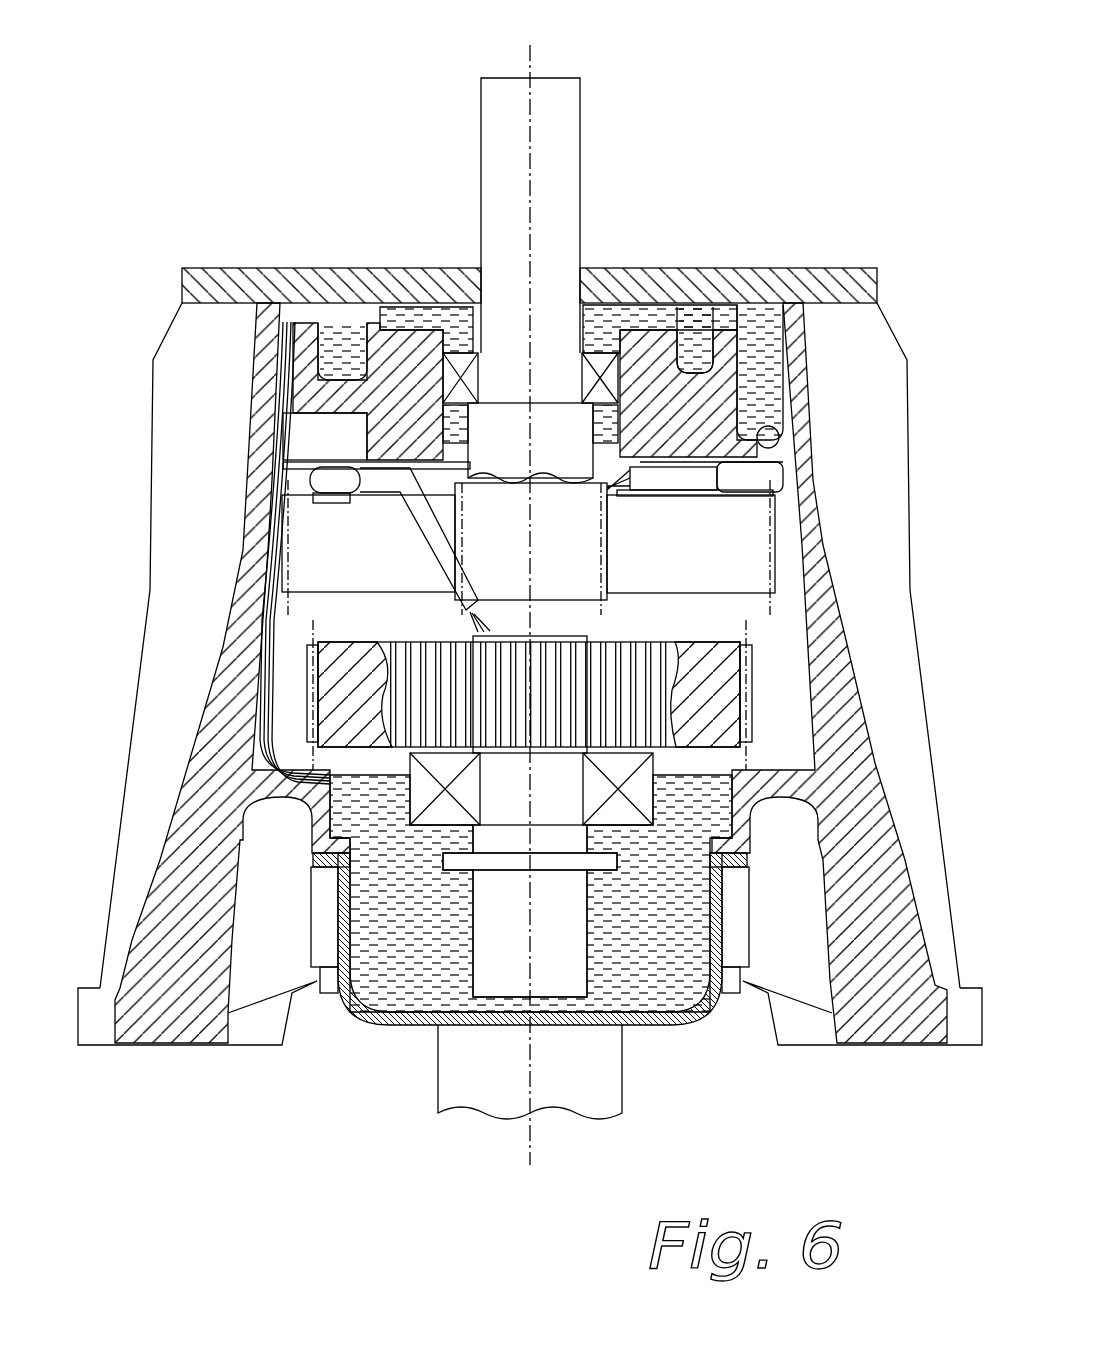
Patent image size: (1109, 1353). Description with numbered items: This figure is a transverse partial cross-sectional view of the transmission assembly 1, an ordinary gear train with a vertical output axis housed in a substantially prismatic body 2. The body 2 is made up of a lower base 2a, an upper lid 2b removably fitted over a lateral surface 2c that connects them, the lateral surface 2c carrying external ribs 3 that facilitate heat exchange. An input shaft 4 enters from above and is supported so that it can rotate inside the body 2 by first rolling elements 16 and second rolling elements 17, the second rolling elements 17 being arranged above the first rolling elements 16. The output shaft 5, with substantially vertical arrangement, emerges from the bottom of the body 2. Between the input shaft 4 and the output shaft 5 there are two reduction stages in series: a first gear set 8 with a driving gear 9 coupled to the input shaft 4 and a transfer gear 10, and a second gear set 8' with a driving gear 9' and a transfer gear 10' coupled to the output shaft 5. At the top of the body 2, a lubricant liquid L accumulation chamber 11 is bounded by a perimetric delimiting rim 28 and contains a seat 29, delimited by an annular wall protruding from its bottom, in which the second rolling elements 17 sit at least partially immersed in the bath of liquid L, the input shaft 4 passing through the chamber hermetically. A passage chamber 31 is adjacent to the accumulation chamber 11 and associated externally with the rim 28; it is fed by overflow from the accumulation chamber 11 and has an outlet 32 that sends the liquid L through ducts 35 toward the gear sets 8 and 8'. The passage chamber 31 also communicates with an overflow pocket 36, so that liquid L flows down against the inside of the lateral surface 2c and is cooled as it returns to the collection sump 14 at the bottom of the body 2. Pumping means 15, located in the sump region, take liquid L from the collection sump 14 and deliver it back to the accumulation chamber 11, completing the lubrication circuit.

The transmission assembly 1 is at (742, 112).
The body 2 is at (112, 866).
The lower base 2a is at (167, 1046).
The upper lid 2b is at (850, 267).
The lateral surface 2c is at (225, 606).
The ribs 3 is at (160, 797).
The input shaft 4 is at (598, 170).
The output shaft 5 is at (412, 1090).
The first gear set 8 is at (320, 802).
The second gear set 8' is at (668, 619).
The driving gear 9 is at (529, 677).
The driving gear 9' is at (571, 549).
The transfer gear 10 is at (609, 695).
The transfer gear 10' is at (590, 547).
The accumulation chamber 11 is at (692, 300).
The collection sump 14 is at (677, 992).
The pumping means 15 is at (497, 985).
The first rolling elements 16 is at (428, 805).
The second rolling elements 17 is at (460, 267).
The perimetric delimiting rim 28 is at (379, 267).
The seat 29 is at (618, 267).
The passage chamber 31 is at (338, 318).
The outlet 32 is at (780, 443).
The ducts 35 is at (443, 543).
The overflow pocket 36 is at (288, 312).
The lubricant liquid L is at (662, 325).